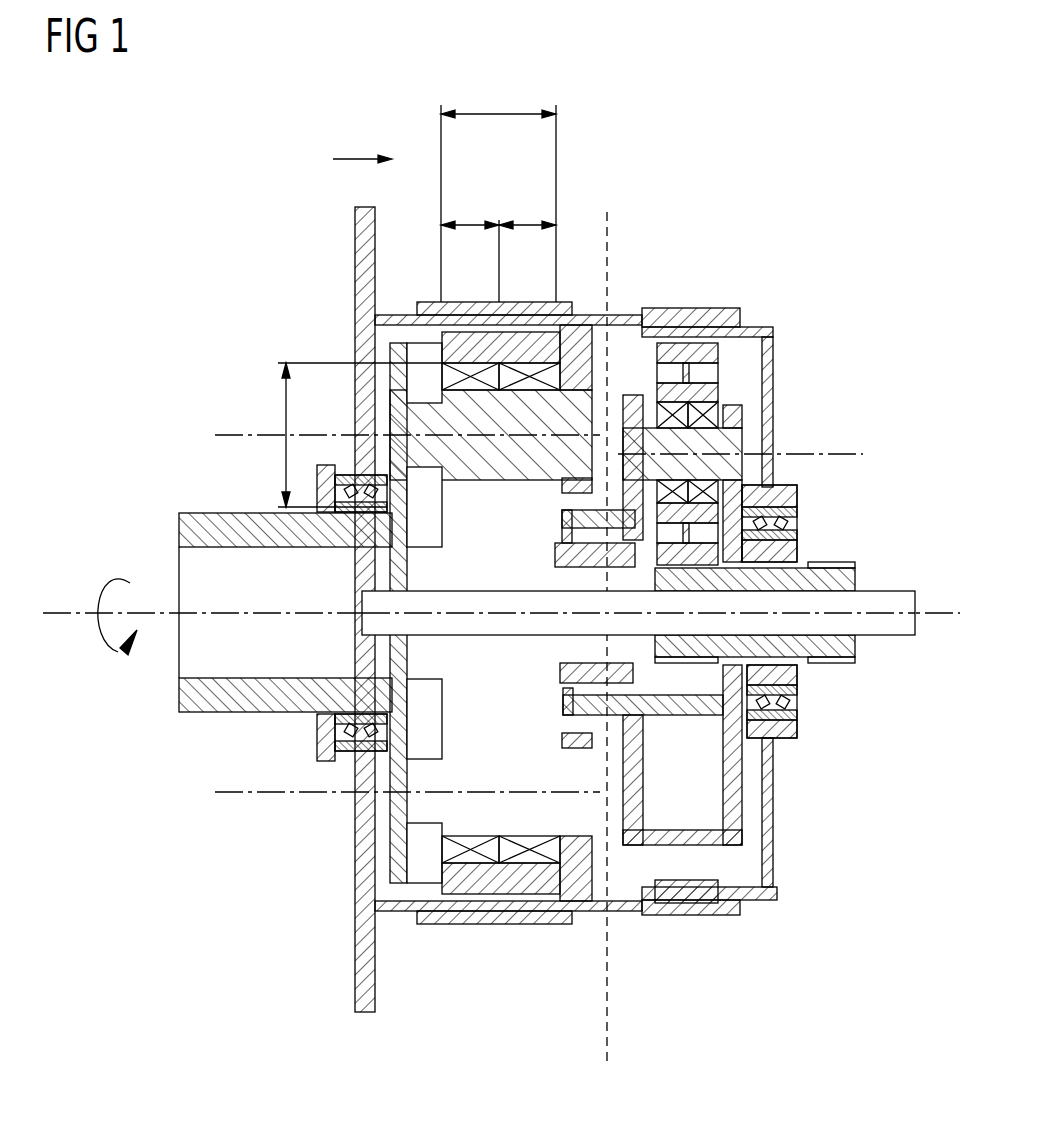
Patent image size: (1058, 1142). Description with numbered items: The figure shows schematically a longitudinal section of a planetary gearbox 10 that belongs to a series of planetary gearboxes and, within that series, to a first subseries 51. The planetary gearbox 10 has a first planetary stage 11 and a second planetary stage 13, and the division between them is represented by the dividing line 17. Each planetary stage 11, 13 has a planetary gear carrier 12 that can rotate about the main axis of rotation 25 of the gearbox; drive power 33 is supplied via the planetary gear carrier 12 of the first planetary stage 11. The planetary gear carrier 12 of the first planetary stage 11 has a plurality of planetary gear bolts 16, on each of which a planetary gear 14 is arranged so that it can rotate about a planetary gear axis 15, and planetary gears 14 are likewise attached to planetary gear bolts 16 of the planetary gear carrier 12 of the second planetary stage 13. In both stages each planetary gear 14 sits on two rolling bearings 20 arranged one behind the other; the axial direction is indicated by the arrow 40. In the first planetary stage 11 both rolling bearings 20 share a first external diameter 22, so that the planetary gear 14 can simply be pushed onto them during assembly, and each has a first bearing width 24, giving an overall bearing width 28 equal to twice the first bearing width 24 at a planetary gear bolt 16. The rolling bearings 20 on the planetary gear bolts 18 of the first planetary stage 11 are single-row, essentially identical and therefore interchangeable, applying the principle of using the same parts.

The planetary gearbox 10 is at (753, 106).
The first subseries 51 is at (818, 47).
The first planetary stage 11 is at (519, 1061).
The planetary gear carrier 12 is at (197, 518).
The second planetary stage 13 is at (718, 1061).
The planetary gear 14 is at (535, 318).
The planetary gear axis 15 is at (227, 434).
The planetary gear bolt 16 is at (397, 423).
The dividing line 17 is at (608, 232).
The planetary gear bolt 18 is at (362, 859).
The rolling bearing 20 is at (472, 318).
The first external diameter 22 is at (280, 460).
The first bearing width 24 is at (467, 222).
The main axis of rotation 25 is at (55, 610).
The overall bearing width 28 is at (497, 110).
The drive power 33 is at (130, 583).
The arrow 40 is at (352, 158).